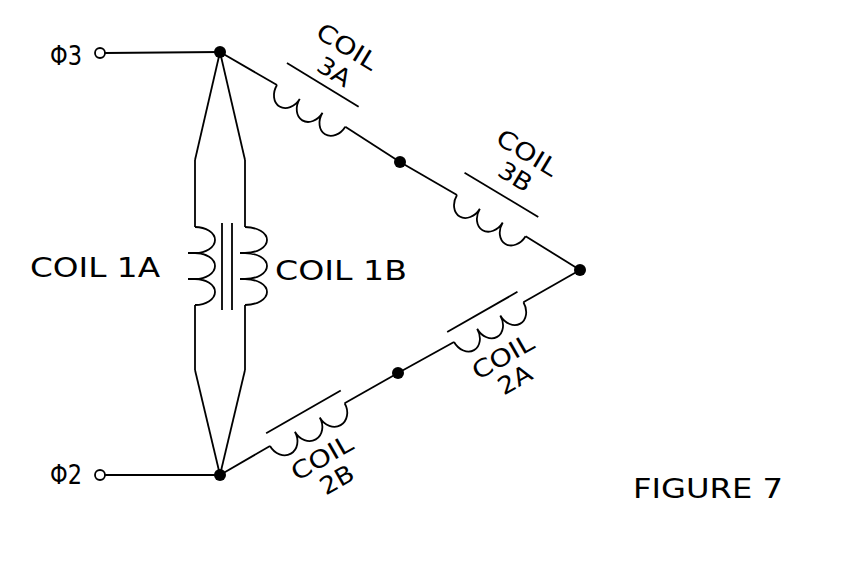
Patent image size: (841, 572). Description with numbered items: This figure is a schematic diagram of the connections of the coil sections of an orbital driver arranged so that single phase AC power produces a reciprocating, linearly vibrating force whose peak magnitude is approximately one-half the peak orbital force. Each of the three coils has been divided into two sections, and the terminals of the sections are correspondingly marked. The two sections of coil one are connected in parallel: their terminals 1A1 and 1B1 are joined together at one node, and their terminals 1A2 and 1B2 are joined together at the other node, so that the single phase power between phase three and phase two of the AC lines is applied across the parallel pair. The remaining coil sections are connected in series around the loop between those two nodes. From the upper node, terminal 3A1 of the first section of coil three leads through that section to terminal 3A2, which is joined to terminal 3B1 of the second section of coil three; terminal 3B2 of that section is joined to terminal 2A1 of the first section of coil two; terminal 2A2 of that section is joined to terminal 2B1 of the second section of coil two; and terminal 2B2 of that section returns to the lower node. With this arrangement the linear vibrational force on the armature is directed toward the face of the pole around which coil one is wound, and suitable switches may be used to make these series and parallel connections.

The terminal of coil 1A 1A1 is at (183, 80).
The terminal of coil 1B 1B1 is at (195, 106).
The terminal of coil 3A 3A1 is at (252, 42).
The terminal of coil 3A 3A2 is at (368, 170).
The terminal of coil 3B 3B1 is at (428, 149).
The terminal of coil 3B 3B2 is at (571, 232).
The terminal of coil 2A 2A1 is at (570, 307).
The terminal of coil 2A 2A2 is at (390, 352).
The terminal of coil 2B 2B1 is at (404, 400).
The terminal of coil 2B 2B2 is at (252, 489).
The terminal of coil 1B 1B2 is at (194, 422).
The terminal of coil 1A 1A2 is at (182, 456).